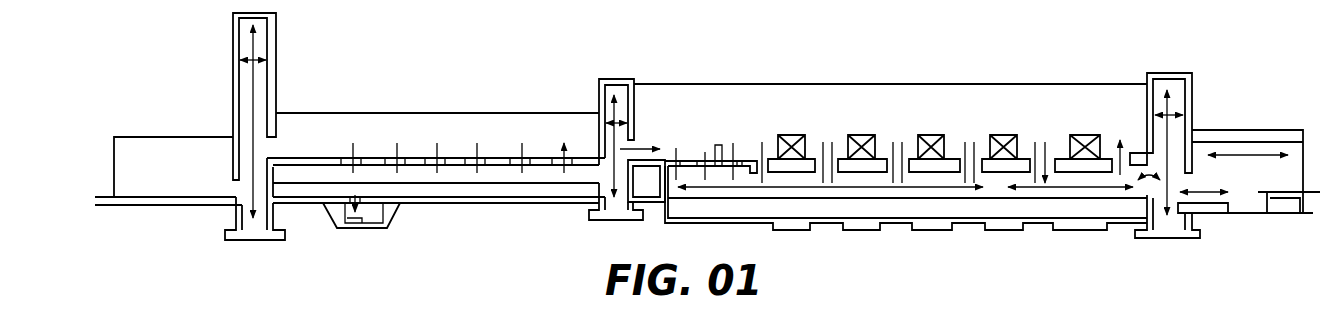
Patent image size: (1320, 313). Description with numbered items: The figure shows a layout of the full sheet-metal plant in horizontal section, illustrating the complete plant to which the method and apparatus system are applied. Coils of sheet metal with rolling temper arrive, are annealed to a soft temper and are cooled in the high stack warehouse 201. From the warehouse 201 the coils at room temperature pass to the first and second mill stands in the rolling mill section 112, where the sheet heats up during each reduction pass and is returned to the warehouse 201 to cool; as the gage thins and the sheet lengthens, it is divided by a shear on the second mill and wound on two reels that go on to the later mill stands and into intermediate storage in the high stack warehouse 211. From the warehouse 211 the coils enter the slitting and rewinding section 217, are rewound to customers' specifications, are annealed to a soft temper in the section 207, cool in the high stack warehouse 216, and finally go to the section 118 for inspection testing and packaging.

The annealing section 207 is at (195, 110).
The high stack warehouse 216 is at (276, 35).
The slitting and rewinding section 217 is at (436, 151).
The inspection, testing and packaging section 118 is at (369, 110).
The high stack warehouse 211 is at (636, 80).
The rolling mill section 112 is at (854, 82).
The high stack warehouse 201 is at (1192, 80).